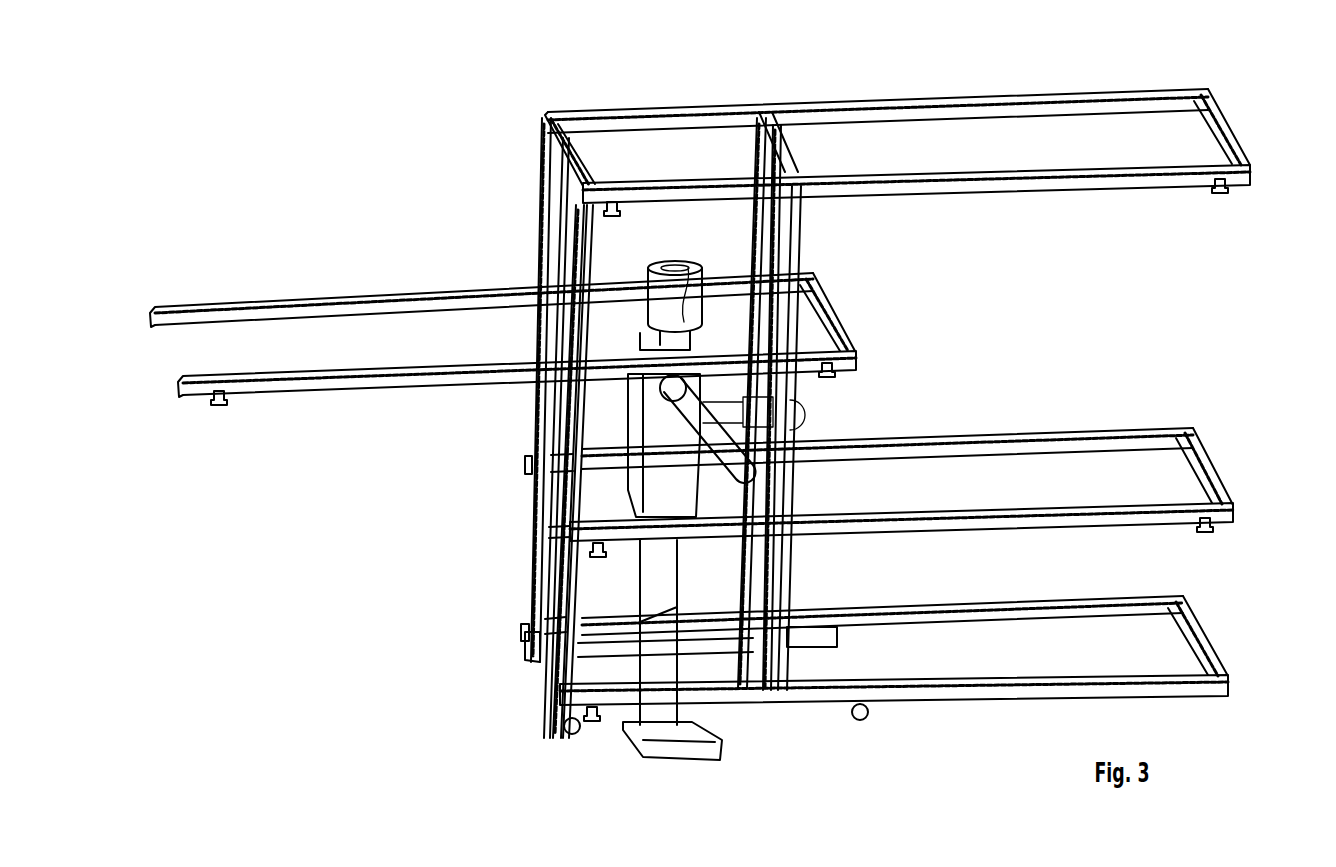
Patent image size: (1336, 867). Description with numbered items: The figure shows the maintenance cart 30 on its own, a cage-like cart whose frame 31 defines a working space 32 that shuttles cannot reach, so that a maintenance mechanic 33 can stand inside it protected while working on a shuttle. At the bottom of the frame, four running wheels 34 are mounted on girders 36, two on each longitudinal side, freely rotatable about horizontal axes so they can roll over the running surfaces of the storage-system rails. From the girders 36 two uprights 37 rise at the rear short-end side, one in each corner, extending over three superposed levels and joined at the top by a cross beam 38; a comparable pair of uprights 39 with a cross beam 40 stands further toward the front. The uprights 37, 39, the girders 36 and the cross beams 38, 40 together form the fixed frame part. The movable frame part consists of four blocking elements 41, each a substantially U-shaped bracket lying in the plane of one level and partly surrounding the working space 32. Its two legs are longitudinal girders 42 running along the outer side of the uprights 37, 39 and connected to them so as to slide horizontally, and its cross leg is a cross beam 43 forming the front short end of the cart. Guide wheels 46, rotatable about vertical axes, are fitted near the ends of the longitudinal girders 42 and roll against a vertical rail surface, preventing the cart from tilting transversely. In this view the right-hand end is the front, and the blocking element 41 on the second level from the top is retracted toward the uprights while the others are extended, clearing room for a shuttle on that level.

The maintenance cart 30 is at (649, 429).
The frame 31 is at (522, 342).
The working space 32 is at (691, 166).
The maintenance mechanic 33 is at (680, 441).
The running wheels 34 is at (577, 736).
The girders 36 is at (553, 672).
The uprights 37 is at (540, 510).
The cross beam 38 is at (566, 128).
The uprights 39 is at (757, 230).
The cross beam 40 is at (783, 157).
The blocking elements 41 is at (728, 381).
The longitudinal girders 42 is at (1052, 100).
The cross beam 43 is at (1232, 158).
The guide wheels 46 is at (612, 218).